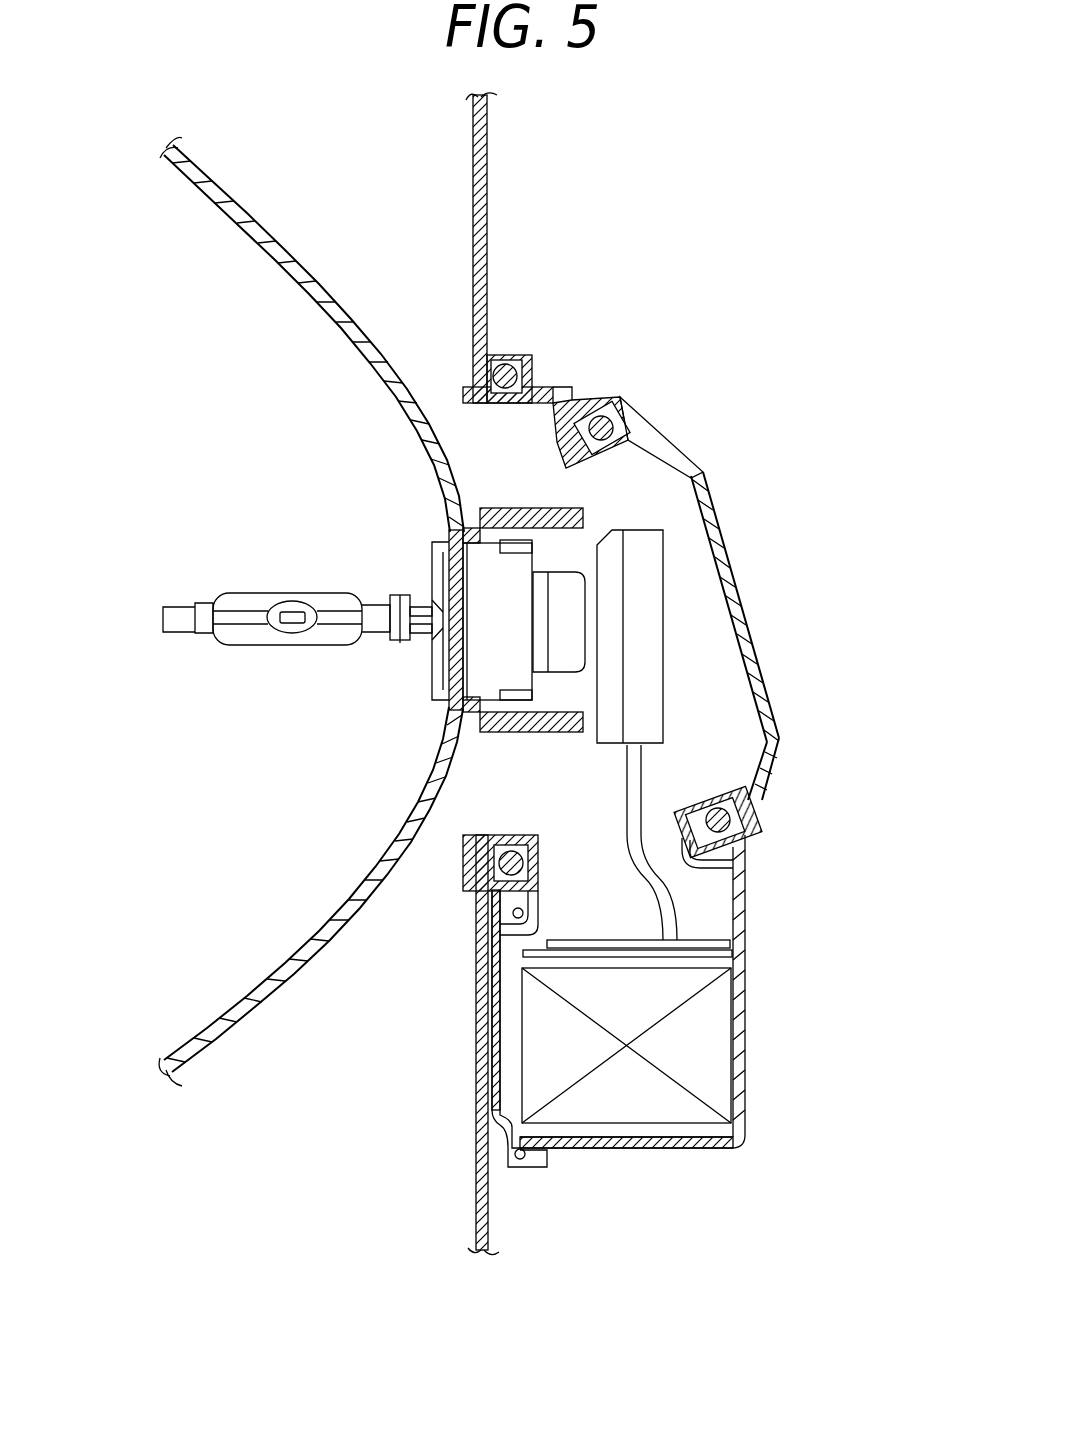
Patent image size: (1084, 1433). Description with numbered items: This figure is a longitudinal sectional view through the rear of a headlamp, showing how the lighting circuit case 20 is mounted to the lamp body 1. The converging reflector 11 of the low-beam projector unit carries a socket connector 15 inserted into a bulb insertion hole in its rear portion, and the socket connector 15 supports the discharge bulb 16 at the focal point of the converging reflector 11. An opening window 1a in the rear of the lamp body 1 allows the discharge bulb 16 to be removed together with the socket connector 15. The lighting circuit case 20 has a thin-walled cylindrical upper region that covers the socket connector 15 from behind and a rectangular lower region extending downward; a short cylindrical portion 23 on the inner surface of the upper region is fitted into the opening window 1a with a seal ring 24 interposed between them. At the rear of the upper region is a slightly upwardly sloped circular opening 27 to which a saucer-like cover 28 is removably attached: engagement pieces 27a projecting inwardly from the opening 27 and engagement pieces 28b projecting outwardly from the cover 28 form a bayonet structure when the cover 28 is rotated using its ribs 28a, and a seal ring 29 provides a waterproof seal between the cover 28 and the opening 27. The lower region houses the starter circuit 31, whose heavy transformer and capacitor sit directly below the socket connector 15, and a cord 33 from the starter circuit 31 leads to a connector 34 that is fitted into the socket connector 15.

The lamp body 1 is at (476, 1030).
The opening window 1a is at (465, 852).
The converging reflector 11 is at (285, 963).
The socket connector 15 is at (482, 583).
The discharge bulb 16 is at (247, 600).
The lighting circuit case 20 is at (748, 1060).
The short cylindrical portion 23 is at (520, 410).
The seal ring 24 is at (505, 360).
The circular opening 27 is at (760, 808).
The engagement pieces 27a is at (740, 868).
The cover 28 is at (736, 580).
The ribs 28a is at (660, 457).
The engagement pieces 28b is at (745, 893).
The seal ring 29 is at (740, 780).
The starter circuit 31 is at (715, 1013).
The cord 33 is at (640, 770).
The connector 34 is at (650, 636).